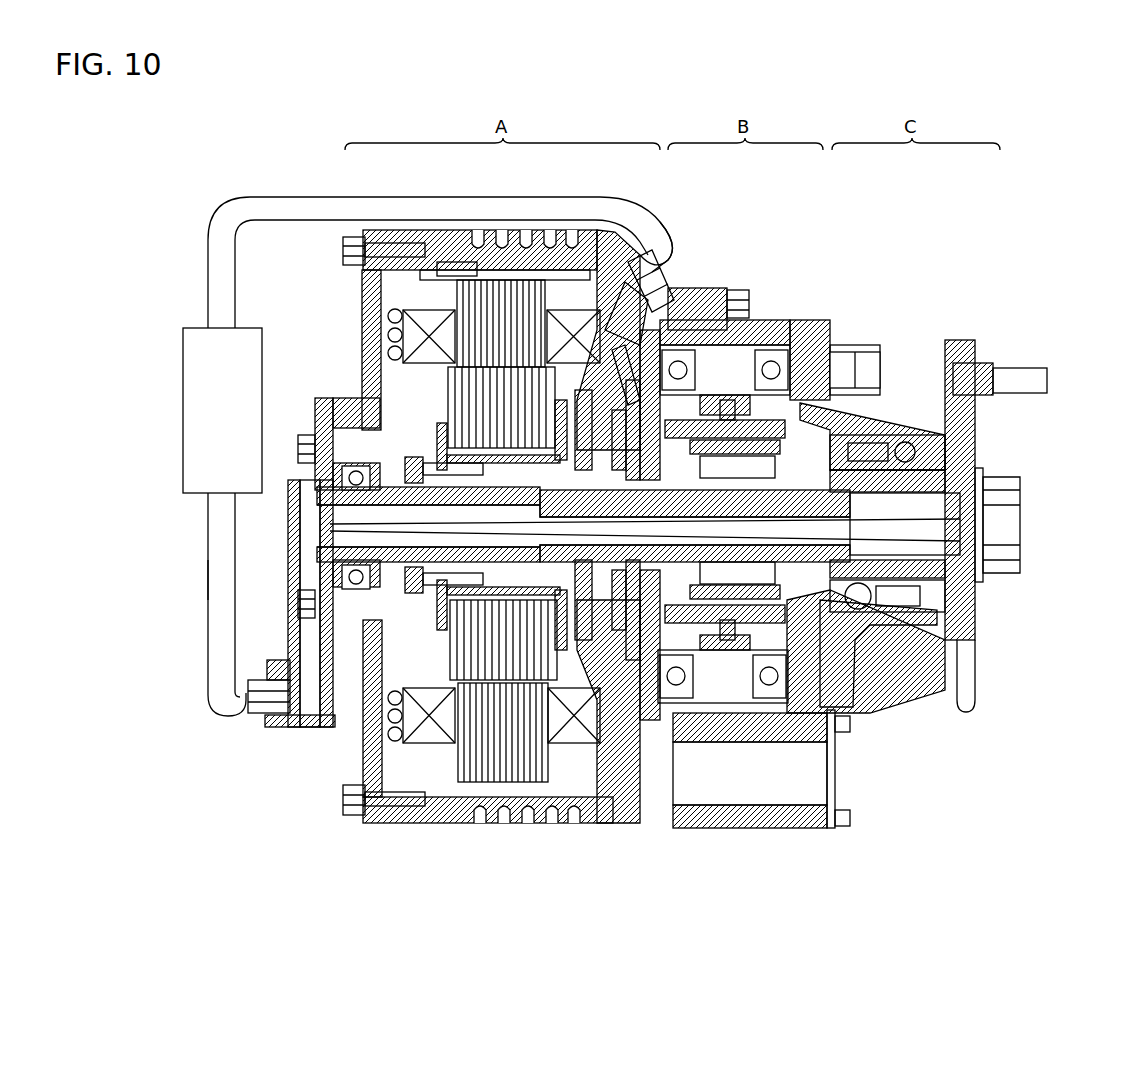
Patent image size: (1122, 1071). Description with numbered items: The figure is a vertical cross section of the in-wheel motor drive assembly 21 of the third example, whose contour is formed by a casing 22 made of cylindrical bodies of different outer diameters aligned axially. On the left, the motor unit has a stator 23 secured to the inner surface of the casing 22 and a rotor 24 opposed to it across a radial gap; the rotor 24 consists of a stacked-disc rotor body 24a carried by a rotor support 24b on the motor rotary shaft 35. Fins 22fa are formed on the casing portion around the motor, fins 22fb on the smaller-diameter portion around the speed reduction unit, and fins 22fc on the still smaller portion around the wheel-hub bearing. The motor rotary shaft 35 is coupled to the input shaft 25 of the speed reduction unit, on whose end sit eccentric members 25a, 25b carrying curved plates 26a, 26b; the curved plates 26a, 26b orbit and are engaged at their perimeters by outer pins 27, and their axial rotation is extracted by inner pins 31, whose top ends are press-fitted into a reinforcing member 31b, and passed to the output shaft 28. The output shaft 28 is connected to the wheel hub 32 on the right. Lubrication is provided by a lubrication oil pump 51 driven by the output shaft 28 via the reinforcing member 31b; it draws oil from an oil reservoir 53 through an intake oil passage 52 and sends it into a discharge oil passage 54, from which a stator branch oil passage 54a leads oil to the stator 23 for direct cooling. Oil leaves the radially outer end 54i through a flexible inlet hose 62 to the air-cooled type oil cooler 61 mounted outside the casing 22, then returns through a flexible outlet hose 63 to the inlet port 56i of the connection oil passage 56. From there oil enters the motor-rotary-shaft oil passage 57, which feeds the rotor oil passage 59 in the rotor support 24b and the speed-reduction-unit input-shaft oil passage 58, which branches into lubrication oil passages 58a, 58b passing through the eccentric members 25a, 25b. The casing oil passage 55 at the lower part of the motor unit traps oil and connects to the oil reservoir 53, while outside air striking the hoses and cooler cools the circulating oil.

The in-wheel motor drive assembly 21 is at (207, 188).
The casing 22 is at (405, 824).
The fins 22fa is at (492, 822).
The fins 22fb is at (800, 325).
The fins 22fc is at (905, 627).
The stator 23 is at (465, 765).
The rotor 24 is at (297, 757).
The rotor body 24a is at (458, 735).
The rotor support 24b is at (462, 667).
The input shaft 25 is at (556, 790).
The eccentric member 25a is at (680, 712).
The eccentric member 25b is at (1010, 469).
The curved plate 26a is at (713, 702).
The curved plate 26b is at (748, 680).
The outer pins 27 is at (748, 345).
The output shaft 28 is at (1022, 505).
The inner pins 31 is at (737, 630).
The reinforcing member 31b is at (618, 262).
The wheel hub 32 is at (985, 596).
The motor rotary shaft 35 is at (340, 578).
The lubrication oil pump 51 is at (607, 825).
The intake oil passage 52 is at (642, 825).
The oil reservoir 53 is at (805, 775).
The discharge oil passage 54 is at (690, 300).
The stator branch oil passage 54a is at (606, 240).
The radially outer end of discharge oil passage 54i is at (672, 235).
The casing oil passage 55 is at (458, 788).
The connection oil passage 56 is at (308, 605).
The inlet port 56i is at (232, 715).
The motor-rotary-shaft oil passage 57 is at (332, 522).
The speed-reduction-unit input-shaft oil passage 58 is at (335, 535).
The lubrication oil passage 58a is at (960, 519).
The lubrication oil passage 58b is at (960, 541).
The rotor oil passage 59 is at (440, 455).
The air-cooled type oil cooler 61 is at (200, 405).
The inlet hose 62 is at (485, 198).
The outlet hose 63 is at (215, 600).